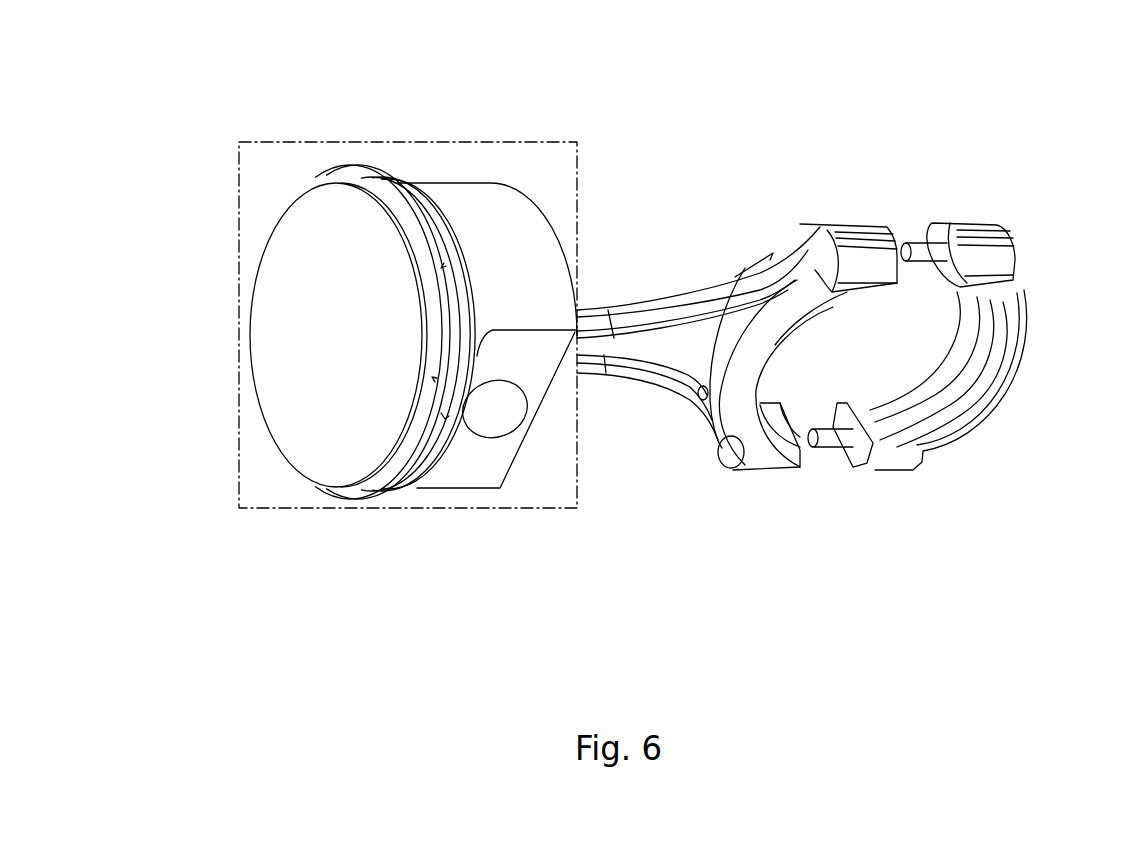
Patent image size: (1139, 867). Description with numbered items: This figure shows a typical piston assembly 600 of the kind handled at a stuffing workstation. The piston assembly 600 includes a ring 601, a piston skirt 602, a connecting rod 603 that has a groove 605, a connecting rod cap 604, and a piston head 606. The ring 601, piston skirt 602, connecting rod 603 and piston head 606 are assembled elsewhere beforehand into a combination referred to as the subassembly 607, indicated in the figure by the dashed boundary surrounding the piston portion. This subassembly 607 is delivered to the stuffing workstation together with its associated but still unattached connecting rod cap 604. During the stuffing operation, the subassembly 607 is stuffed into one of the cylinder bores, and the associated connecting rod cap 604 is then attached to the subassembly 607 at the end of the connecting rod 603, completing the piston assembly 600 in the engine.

The piston assembly 600 is at (604, 319).
The ring 601 is at (383, 167).
The piston skirt 602 is at (493, 202).
The connecting rod 603 is at (708, 290).
The connecting rod cap 604 is at (967, 217).
The groove 605 is at (662, 350).
The piston head 606 is at (337, 335).
The subassembly 607 is at (239, 142).